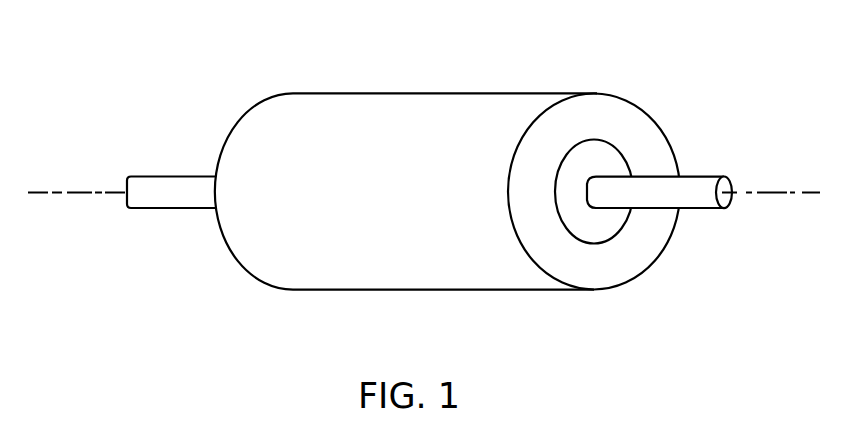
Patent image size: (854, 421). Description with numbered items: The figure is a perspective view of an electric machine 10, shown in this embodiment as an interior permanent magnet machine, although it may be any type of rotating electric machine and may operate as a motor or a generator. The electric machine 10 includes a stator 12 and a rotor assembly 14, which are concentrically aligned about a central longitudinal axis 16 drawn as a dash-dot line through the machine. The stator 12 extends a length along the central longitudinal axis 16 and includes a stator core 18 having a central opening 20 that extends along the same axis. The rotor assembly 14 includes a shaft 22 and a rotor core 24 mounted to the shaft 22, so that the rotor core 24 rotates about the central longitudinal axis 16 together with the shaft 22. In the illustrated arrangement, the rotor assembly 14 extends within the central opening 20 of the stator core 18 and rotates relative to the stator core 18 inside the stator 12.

The electric machine 10 is at (653, 68).
The stator 12 is at (658, 117).
The rotor assembly 14 is at (633, 160).
The central longitudinal axis 16 is at (75, 194).
The stator core 18 is at (572, 117).
The central opening 20 is at (612, 227).
The shaft 22 is at (700, 204).
The rotor core 24 is at (583, 223).